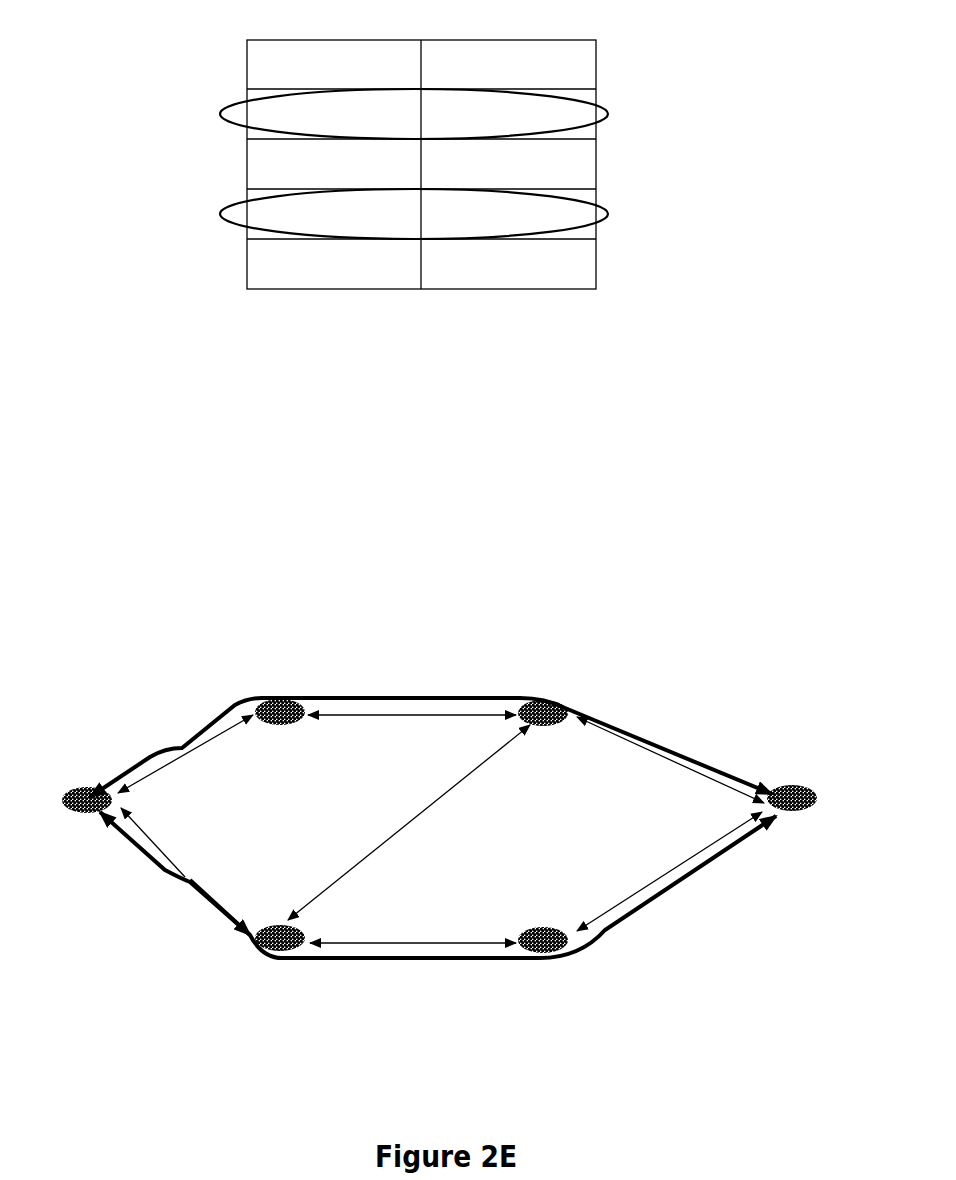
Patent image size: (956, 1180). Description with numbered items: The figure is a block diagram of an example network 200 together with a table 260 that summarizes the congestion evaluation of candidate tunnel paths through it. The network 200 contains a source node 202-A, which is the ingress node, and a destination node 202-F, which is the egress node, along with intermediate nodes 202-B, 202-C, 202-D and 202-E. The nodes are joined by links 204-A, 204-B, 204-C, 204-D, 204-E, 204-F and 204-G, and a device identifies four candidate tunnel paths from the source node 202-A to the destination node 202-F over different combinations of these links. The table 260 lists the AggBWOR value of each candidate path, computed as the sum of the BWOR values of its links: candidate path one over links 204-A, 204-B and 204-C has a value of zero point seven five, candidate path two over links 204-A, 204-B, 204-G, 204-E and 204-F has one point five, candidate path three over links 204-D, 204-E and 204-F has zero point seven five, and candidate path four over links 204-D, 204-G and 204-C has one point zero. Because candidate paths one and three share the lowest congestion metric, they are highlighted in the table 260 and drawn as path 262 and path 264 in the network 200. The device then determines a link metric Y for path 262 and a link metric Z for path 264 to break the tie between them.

The table 260 is at (580, 40).
The network 200 is at (203, 646).
The path 262 is at (397, 698).
The path 264 is at (390, 961).
The source node 202-A is at (92, 812).
The network node B 202-B is at (280, 698).
The network node C 202-C is at (545, 698).
The network node D 202-D is at (282, 955).
The network node E 202-E is at (548, 953).
The destination node 202-F is at (787, 814).
The link 204-A is at (192, 752).
The link 204-B is at (360, 718).
The link 204-C is at (651, 752).
The link 204-D is at (178, 873).
The link 204-E is at (366, 943).
The link 204-F is at (670, 872).
The link 204-G is at (437, 808).